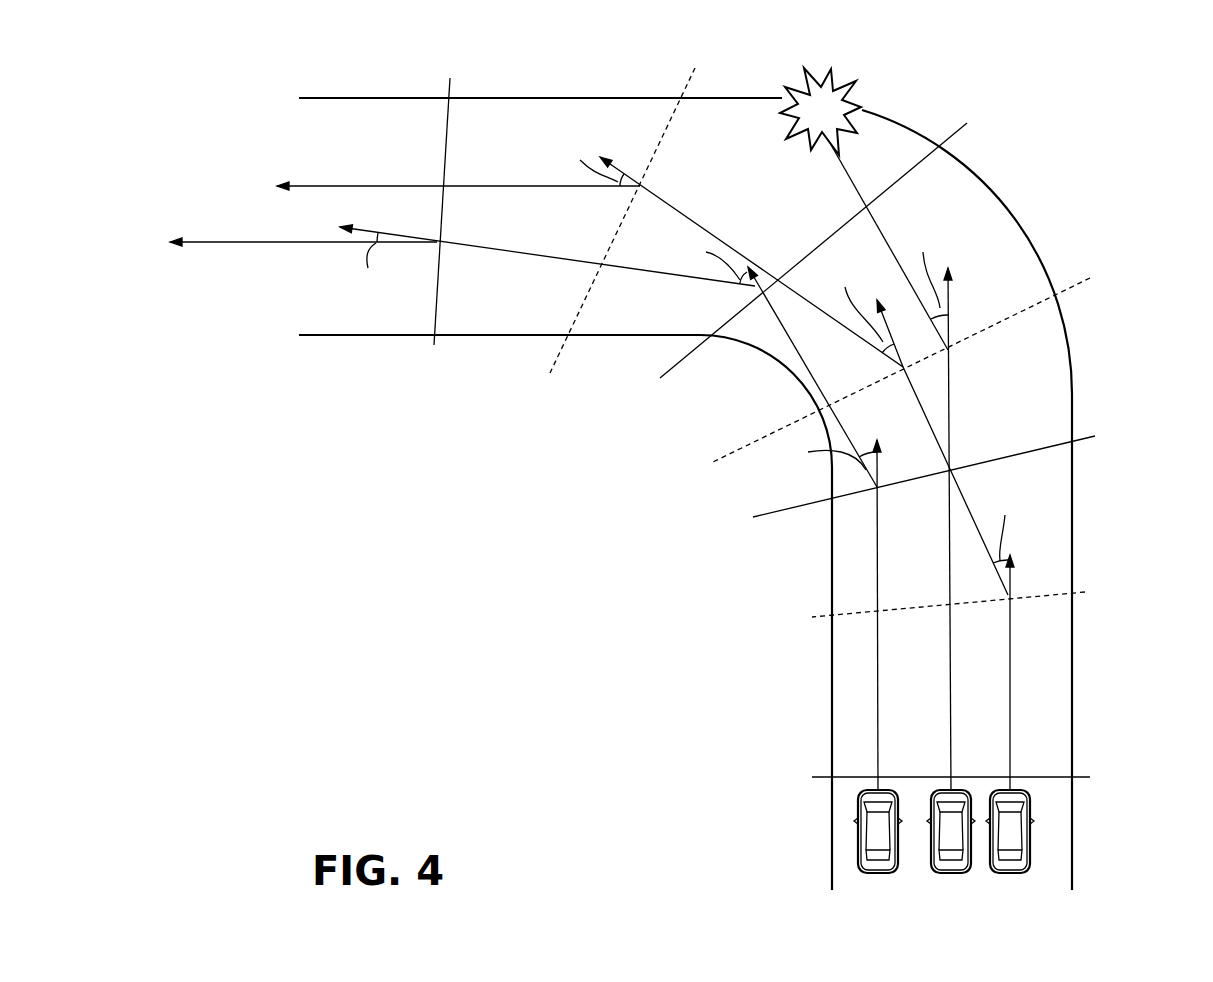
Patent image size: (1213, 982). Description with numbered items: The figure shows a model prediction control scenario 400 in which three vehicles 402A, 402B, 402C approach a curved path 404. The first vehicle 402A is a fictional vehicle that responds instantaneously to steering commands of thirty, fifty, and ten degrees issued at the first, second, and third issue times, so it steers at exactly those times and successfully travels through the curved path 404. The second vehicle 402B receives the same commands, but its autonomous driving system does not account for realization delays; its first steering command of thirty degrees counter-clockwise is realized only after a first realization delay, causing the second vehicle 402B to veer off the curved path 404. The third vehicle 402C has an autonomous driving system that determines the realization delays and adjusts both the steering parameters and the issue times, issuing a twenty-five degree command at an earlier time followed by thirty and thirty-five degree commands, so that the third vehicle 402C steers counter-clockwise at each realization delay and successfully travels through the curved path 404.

The model prediction control scenario 400 is at (667, 462).
The first vehicle 402A is at (878, 877).
The second vehicle 402B is at (951, 877).
The third vehicle 402C is at (1010, 877).
The curved path 404 is at (365, 110).